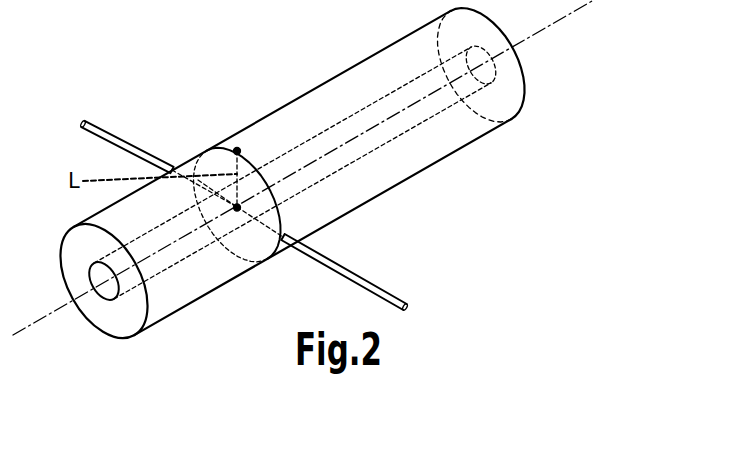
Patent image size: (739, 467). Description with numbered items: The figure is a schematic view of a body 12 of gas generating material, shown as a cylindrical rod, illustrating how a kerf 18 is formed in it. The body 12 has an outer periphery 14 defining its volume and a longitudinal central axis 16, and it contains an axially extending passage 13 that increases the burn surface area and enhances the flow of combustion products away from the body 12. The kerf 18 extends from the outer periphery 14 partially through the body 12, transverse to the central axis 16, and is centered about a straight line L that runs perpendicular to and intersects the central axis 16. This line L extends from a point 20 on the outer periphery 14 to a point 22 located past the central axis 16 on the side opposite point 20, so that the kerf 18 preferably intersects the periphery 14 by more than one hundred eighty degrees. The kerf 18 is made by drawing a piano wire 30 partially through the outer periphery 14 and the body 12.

The body of gas generating material 12 is at (200, 297).
The axially extending passage 13 is at (100, 300).
The outer periphery 14 is at (420, 172).
The longitudinal central axis 16 is at (545, 27).
The kerf 18 is at (281, 200).
The point on the outer periphery 20 is at (237, 148).
The point past the central axis 22 is at (237, 210).
The piano wire 30 is at (362, 278).